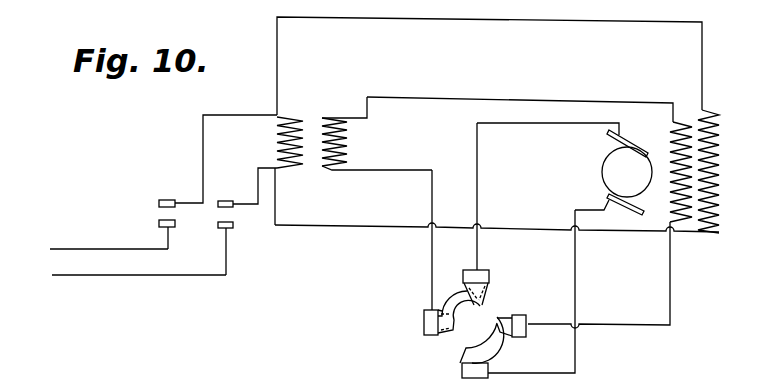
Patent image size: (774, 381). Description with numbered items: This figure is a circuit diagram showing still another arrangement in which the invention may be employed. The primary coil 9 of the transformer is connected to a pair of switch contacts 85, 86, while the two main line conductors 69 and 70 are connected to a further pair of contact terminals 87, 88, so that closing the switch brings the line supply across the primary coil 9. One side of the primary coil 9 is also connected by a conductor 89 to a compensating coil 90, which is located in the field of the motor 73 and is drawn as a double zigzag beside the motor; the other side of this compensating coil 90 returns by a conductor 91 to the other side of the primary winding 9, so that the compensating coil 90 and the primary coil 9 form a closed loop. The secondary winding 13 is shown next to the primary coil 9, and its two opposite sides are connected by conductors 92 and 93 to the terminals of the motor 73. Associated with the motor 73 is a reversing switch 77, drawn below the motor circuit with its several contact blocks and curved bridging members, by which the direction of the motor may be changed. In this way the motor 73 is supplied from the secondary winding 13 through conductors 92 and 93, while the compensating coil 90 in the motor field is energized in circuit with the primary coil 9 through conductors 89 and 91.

The primary coil 9 is at (282, 142).
The secondary winding 13 is at (347, 142).
The main line conductor 69 is at (111, 249).
The main line conductor 70 is at (116, 277).
The motor 73 is at (564, 169).
The reversing switch 77 is at (475, 324).
The switch contact 85 is at (167, 199).
The switch contact 86 is at (225, 200).
The contact terminal 87 is at (176, 229).
The contact terminal 88 is at (234, 229).
The conductor 89 is at (470, 19).
The compensating coil 90 is at (711, 171).
The conductor 91 is at (374, 229).
The conductor 92 is at (448, 99).
The conductor 93 is at (412, 170).